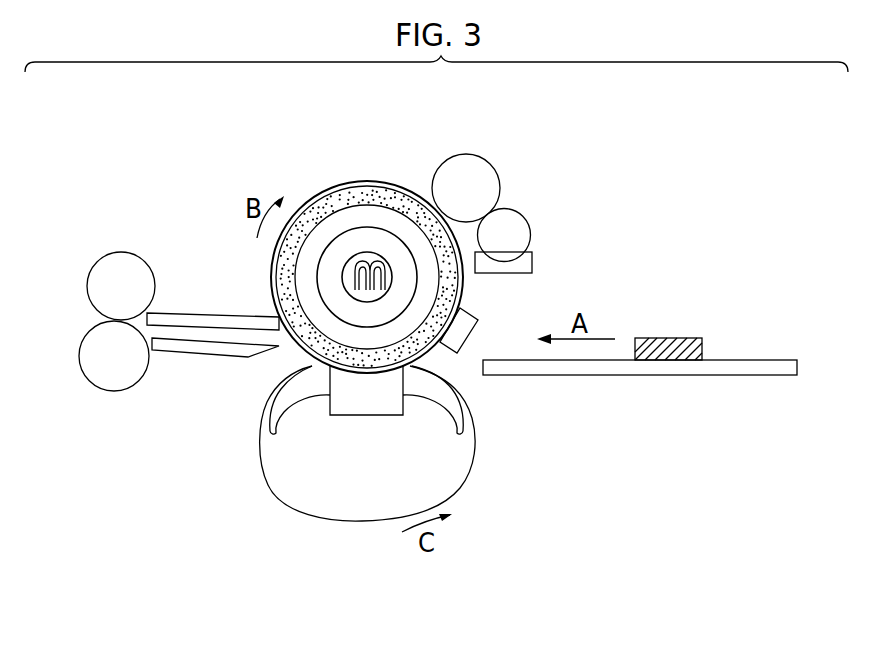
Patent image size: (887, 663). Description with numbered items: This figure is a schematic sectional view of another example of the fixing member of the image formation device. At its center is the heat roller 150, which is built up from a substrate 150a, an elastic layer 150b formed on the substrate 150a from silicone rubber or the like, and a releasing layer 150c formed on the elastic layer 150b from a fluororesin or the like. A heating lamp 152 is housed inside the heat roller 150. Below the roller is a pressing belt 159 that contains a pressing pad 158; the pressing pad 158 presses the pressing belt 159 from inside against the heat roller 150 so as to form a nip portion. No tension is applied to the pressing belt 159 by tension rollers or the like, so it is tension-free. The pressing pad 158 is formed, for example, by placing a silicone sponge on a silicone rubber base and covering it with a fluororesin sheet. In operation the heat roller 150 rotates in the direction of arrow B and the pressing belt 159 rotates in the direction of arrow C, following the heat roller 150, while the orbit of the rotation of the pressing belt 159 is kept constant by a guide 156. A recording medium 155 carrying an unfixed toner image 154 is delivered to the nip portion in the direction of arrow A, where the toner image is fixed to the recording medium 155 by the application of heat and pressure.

The heat roller 150 is at (361, 244).
The substrate 150a is at (437, 278).
The elastic layer 150b is at (353, 194).
The releasing layer 150c is at (270, 273).
The heating lamp 152 is at (386, 266).
The unfixed toner image 154 is at (685, 337).
The recording medium 155 is at (758, 358).
The guide 156 is at (434, 334).
The pressing pad 158 is at (357, 407).
The pressing belt 159 is at (462, 399).